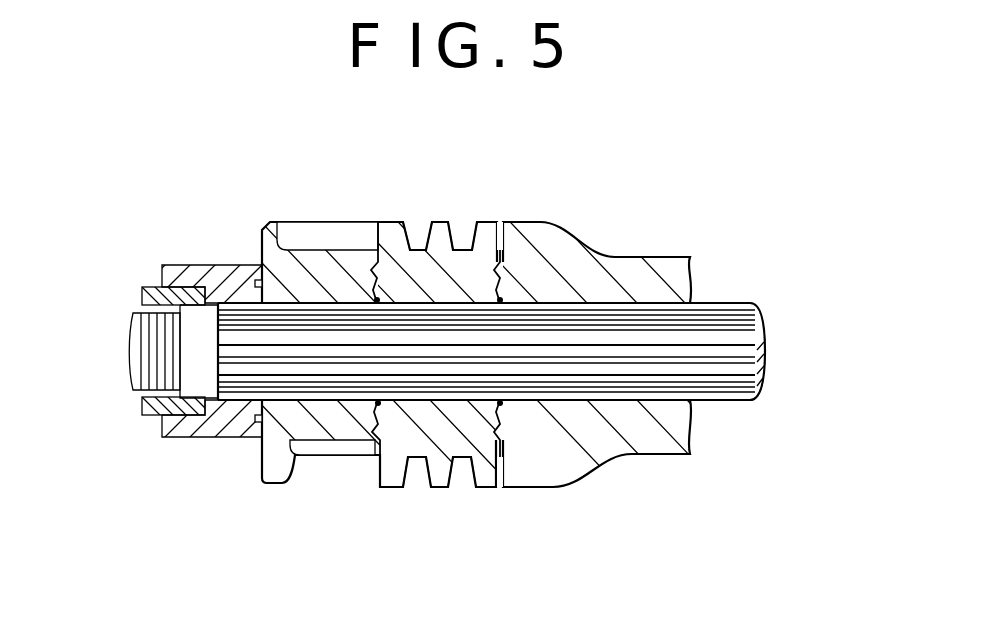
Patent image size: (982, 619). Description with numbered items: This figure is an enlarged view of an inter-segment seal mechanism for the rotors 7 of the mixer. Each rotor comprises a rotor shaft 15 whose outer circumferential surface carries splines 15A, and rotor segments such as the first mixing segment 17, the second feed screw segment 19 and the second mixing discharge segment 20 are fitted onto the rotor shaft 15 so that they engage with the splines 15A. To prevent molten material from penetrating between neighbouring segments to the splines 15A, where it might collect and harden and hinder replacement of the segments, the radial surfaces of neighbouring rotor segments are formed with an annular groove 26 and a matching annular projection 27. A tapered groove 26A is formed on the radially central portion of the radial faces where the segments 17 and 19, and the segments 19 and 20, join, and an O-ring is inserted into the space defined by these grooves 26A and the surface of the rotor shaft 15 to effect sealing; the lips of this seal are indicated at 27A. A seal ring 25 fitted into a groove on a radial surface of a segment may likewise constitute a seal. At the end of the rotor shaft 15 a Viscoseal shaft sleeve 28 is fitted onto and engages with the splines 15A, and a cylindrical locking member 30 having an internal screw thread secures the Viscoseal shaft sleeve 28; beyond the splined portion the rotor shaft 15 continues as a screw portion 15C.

The rotor 7 is at (472, 342).
The rotor shaft 15 is at (733, 329).
The splines 15A is at (715, 303).
The screw portion 15C is at (148, 360).
The first mixing segment 17 is at (653, 272).
The second feed screw segment 19 is at (433, 226).
The second mixing discharge segment 20 is at (303, 232).
The seal ring 25 is at (255, 282).
The annular groove 26 is at (380, 232).
The tapered groove 26A is at (463, 245).
The annular projection 27 is at (369, 440).
The lip edge 27A is at (372, 262).
The Viscoseal shaft sleeve 28 is at (217, 273).
The cylindrical locking member 30 is at (150, 290).